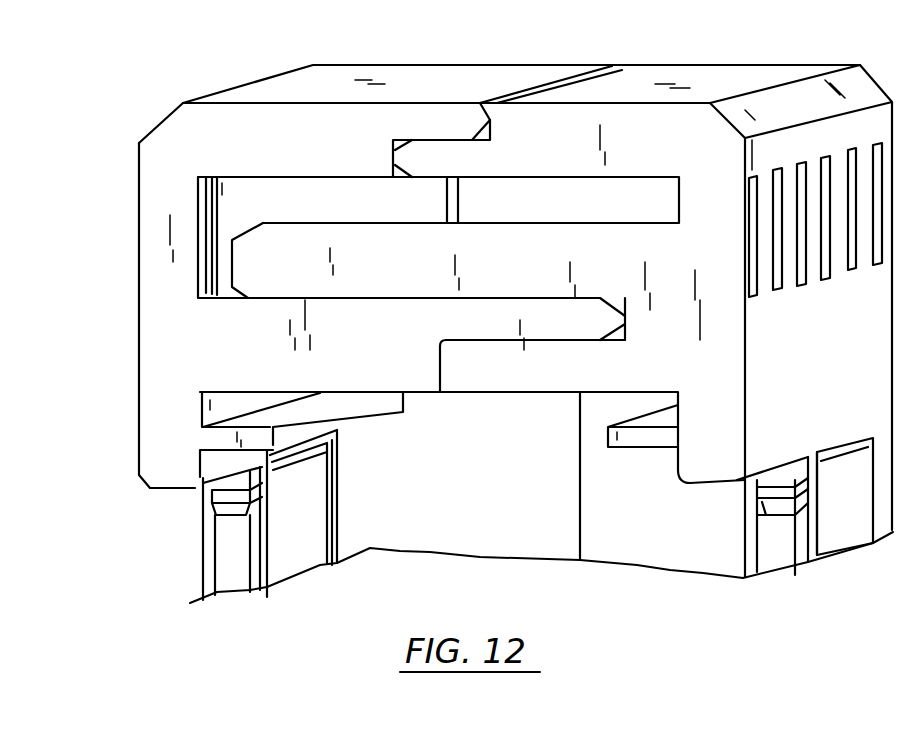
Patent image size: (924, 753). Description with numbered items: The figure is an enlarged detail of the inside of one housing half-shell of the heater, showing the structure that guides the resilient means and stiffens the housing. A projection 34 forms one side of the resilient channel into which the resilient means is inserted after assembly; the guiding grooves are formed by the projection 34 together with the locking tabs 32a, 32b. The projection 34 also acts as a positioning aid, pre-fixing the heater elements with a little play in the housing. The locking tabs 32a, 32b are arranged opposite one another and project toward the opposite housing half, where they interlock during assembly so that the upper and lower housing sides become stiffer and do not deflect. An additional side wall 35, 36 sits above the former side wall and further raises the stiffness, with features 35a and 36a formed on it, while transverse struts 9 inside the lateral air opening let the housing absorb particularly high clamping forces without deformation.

The transverse struts 9 is at (782, 560).
The locking tab 32a is at (585, 240).
The locking tab 32b is at (170, 330).
The projection 34 is at (203, 482).
The side wall 35 is at (195, 127).
The notch 35a is at (428, 116).
The side wall 36 is at (690, 115).
The rib 36a is at (447, 152).